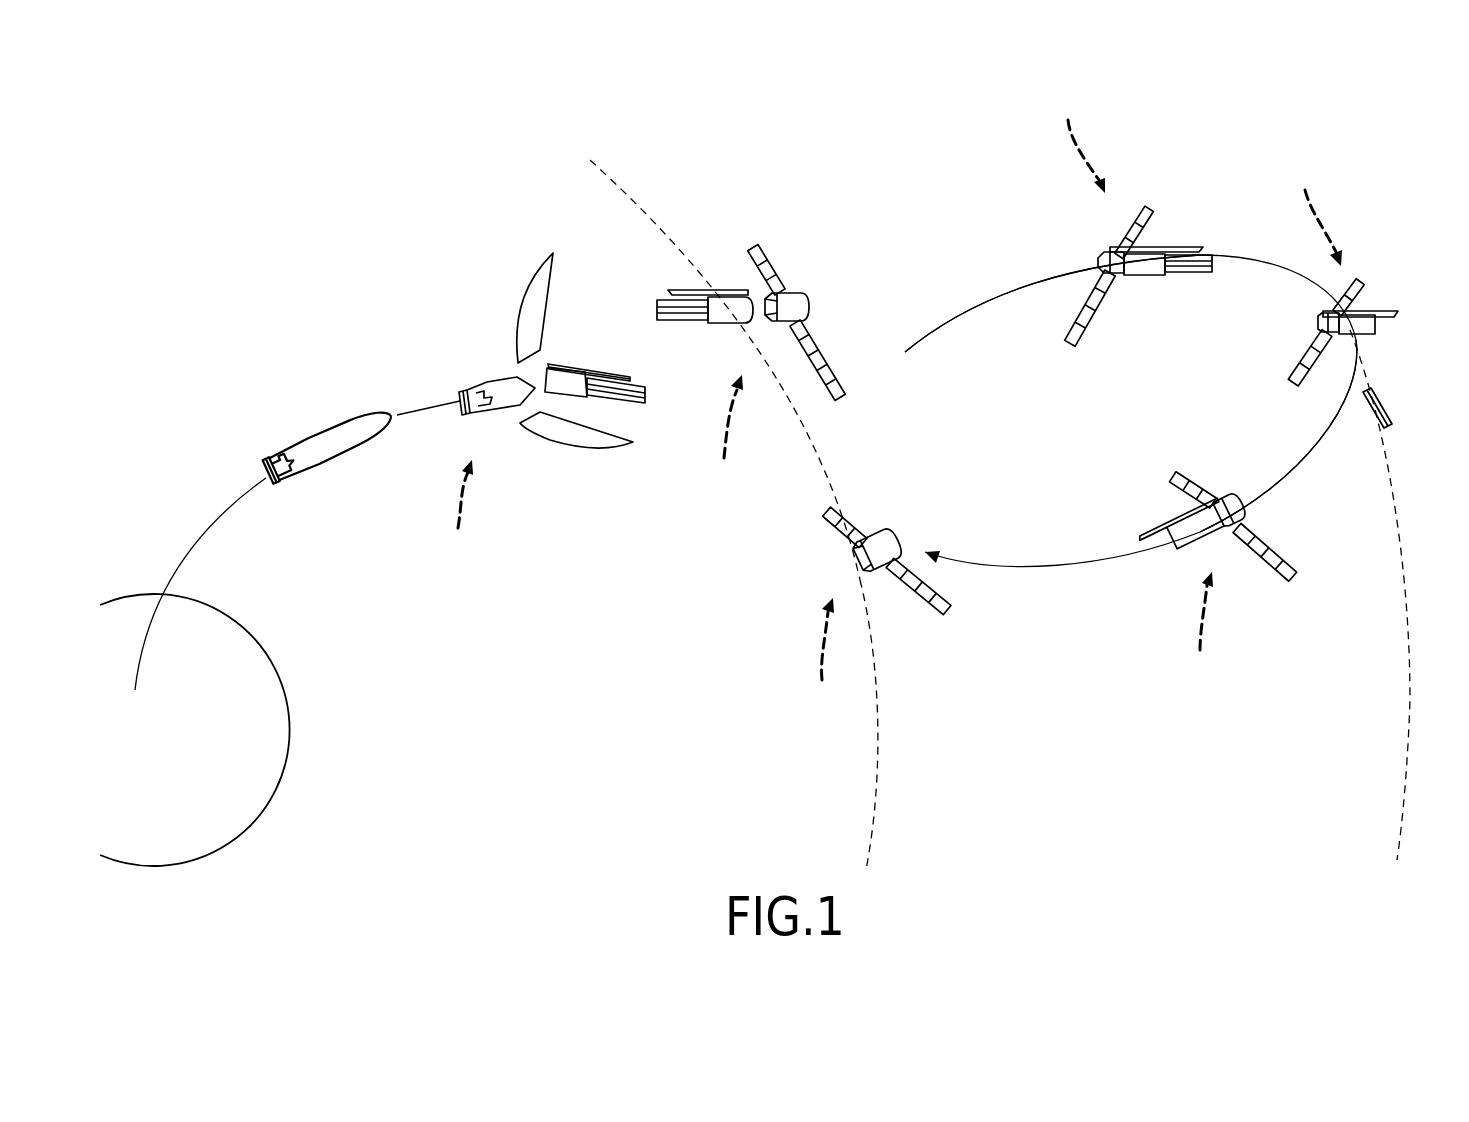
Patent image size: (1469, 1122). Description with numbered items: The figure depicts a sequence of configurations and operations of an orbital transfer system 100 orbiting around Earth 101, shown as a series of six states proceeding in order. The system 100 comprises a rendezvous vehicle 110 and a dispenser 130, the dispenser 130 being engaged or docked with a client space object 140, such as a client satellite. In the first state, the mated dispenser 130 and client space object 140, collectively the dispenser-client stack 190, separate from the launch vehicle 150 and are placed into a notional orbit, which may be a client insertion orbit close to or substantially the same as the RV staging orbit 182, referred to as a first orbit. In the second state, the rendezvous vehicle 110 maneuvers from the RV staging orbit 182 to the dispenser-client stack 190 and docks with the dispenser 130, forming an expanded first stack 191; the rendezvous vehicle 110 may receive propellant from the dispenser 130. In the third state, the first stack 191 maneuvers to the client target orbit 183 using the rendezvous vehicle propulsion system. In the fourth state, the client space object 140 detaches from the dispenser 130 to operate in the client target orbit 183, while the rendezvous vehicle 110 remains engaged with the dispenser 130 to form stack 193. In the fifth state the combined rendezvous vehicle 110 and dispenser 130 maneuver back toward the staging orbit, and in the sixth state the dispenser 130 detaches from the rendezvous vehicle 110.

The orbital transfer system 100 is at (418, 225).
The Earth 101 is at (302, 815).
The rendezvous vehicle 110 is at (805, 303).
The dispenser 130 is at (565, 369).
The client space object 140 is at (633, 403).
The launch vehicle 150 is at (322, 402).
The RV staging orbit 182 is at (880, 777).
The client target orbit 183 is at (1405, 758).
The dispenser-client stack 190 is at (696, 252).
The first stack 191 is at (1083, 215).
The stack 193 is at (1383, 301).